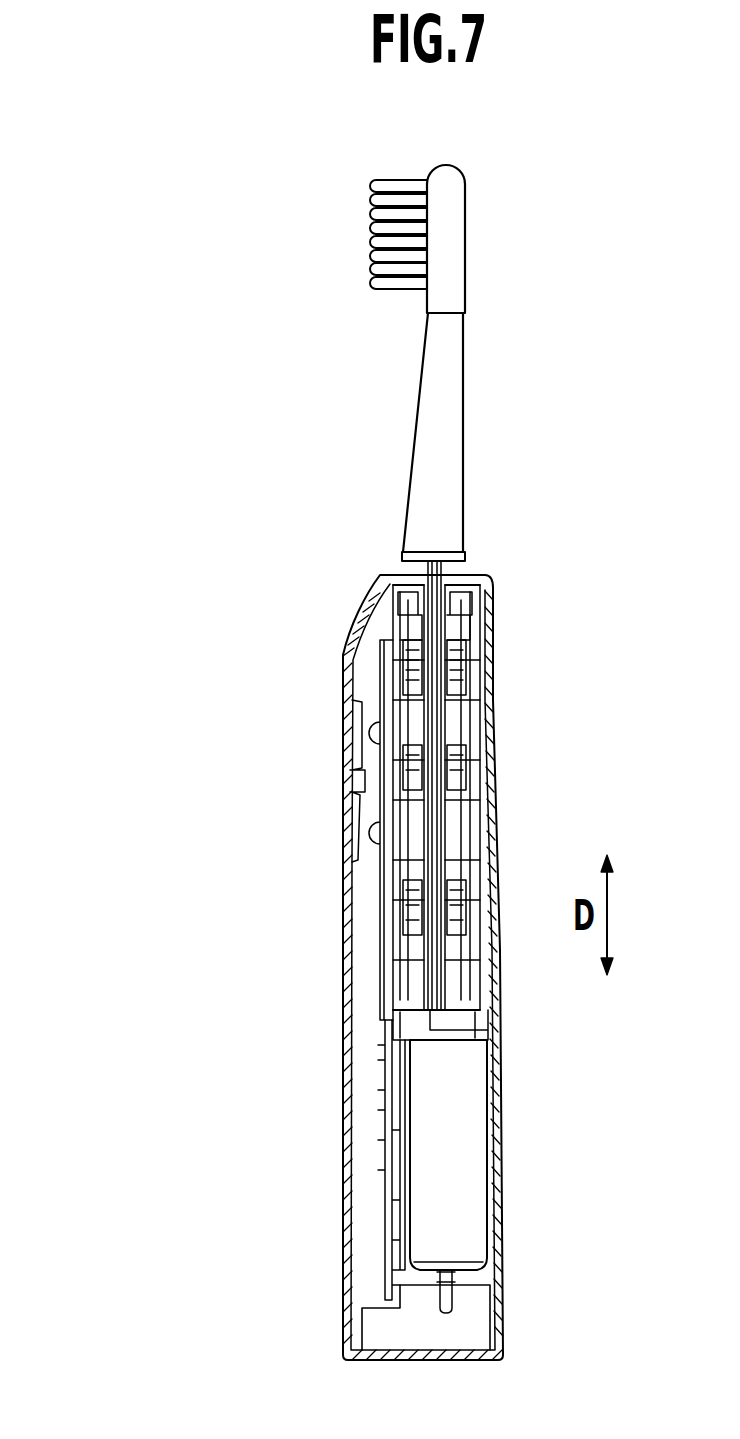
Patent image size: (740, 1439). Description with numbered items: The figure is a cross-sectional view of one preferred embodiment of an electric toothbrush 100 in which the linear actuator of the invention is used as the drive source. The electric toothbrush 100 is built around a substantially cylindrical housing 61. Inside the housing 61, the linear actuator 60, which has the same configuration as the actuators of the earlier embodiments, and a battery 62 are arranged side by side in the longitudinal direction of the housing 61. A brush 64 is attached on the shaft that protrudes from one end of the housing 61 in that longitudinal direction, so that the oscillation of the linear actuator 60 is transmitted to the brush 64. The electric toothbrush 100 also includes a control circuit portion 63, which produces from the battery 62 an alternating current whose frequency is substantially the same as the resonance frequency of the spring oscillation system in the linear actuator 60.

The electric toothbrush 100 is at (205, 308).
The linear actuator 60 is at (425, 773).
The housing 61 is at (343, 927).
The battery 62 is at (446, 1120).
The control circuit portion 63 is at (393, 1062).
The brush 64 is at (440, 465).